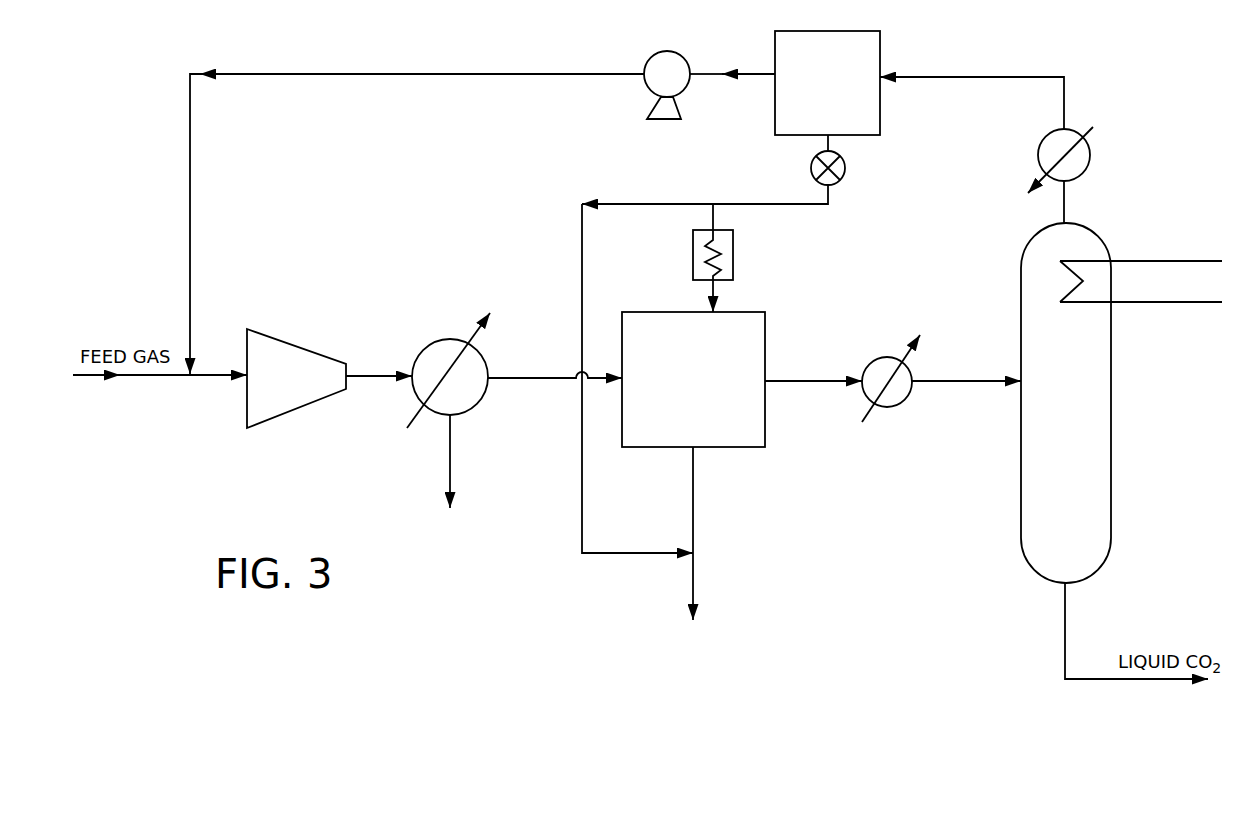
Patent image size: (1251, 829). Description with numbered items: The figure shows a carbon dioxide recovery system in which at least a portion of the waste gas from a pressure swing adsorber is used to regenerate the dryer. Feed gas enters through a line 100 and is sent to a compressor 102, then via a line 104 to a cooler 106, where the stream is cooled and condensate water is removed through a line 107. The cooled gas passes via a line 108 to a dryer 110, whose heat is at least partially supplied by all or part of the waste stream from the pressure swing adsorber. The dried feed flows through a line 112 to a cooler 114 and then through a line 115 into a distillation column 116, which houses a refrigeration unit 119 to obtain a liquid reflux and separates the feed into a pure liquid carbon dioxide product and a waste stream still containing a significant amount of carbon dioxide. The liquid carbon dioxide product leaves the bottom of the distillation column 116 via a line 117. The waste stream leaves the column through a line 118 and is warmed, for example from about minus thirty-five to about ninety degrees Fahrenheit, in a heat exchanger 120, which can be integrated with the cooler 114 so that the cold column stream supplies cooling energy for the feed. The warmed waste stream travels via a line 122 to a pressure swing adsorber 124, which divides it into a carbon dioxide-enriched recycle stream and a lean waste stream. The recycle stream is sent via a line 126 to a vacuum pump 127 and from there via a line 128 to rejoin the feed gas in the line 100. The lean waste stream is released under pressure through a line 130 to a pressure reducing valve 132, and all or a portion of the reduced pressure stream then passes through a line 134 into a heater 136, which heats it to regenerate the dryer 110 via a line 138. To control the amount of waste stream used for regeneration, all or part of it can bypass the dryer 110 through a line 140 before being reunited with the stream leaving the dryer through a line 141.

The line 100 is at (150, 377).
The compressor 102 is at (293, 350).
The line 104 is at (374, 375).
The cooler 106 is at (448, 370).
The line 107 is at (452, 478).
The line 108 is at (530, 376).
The dryer 110 is at (693, 379).
The line 112 is at (802, 380).
The cooler 114 is at (880, 356).
The line 115 is at (963, 384).
The distillation column 116 is at (1066, 403).
The line 117 is at (1128, 681).
The line 118 is at (1066, 202).
The refrigeration unit 119 is at (1160, 260).
The heat exchanger 120 is at (1082, 142).
The line 122 is at (978, 77).
The pressure swing adsorber 124 is at (827, 83).
The line 126 is at (707, 76).
The vacuum pump 127 is at (655, 88).
The line 128 is at (412, 76).
The line 130 is at (832, 141).
The pressure reducing valve 132 is at (845, 168).
The line 134 is at (831, 204).
The heater 136 is at (733, 246).
The line 138 is at (716, 290).
The line 140 is at (581, 470).
The line 141 is at (695, 490).